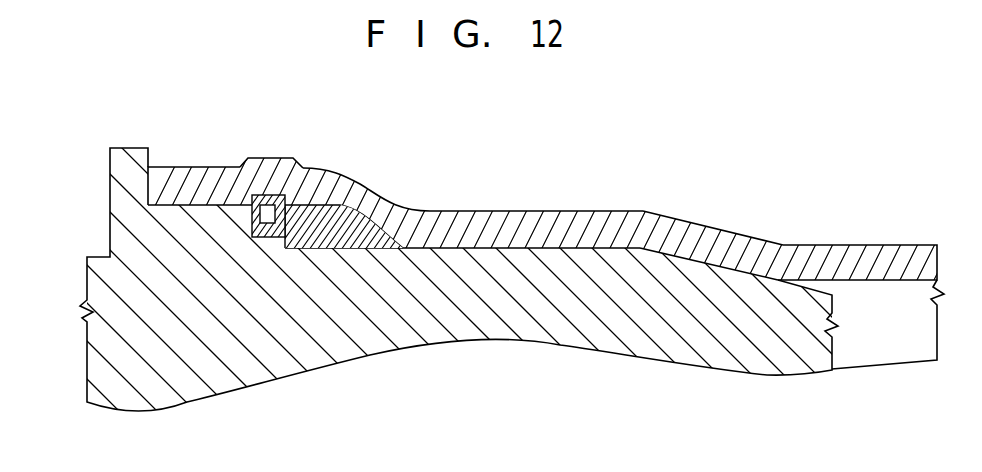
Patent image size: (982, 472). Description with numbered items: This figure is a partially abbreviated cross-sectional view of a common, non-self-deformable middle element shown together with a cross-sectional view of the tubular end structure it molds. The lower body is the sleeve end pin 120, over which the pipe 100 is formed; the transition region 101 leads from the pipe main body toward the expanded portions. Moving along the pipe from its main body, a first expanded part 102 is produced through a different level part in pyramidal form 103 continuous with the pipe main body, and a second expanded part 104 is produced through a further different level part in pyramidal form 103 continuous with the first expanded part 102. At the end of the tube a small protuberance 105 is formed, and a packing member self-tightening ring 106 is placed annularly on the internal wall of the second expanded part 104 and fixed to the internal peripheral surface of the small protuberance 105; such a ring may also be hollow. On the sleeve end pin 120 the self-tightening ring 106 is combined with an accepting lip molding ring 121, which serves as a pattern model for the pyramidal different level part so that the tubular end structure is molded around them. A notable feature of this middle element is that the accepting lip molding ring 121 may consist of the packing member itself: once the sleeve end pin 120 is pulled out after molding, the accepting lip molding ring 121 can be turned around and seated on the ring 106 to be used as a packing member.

The pipe 100 is at (848, 245).
The inclined plate section 101 is at (715, 226).
The first expanded part 102 is at (533, 210).
The different level part in pyramidal form 103 is at (397, 200).
The second expanded part 104 is at (193, 168).
The small protuberance 105 is at (267, 157).
The packing member self-tightening ring 106 is at (259, 195).
The sleeve end pin 120 is at (527, 329).
The accepting lip molding ring 121 is at (330, 212).